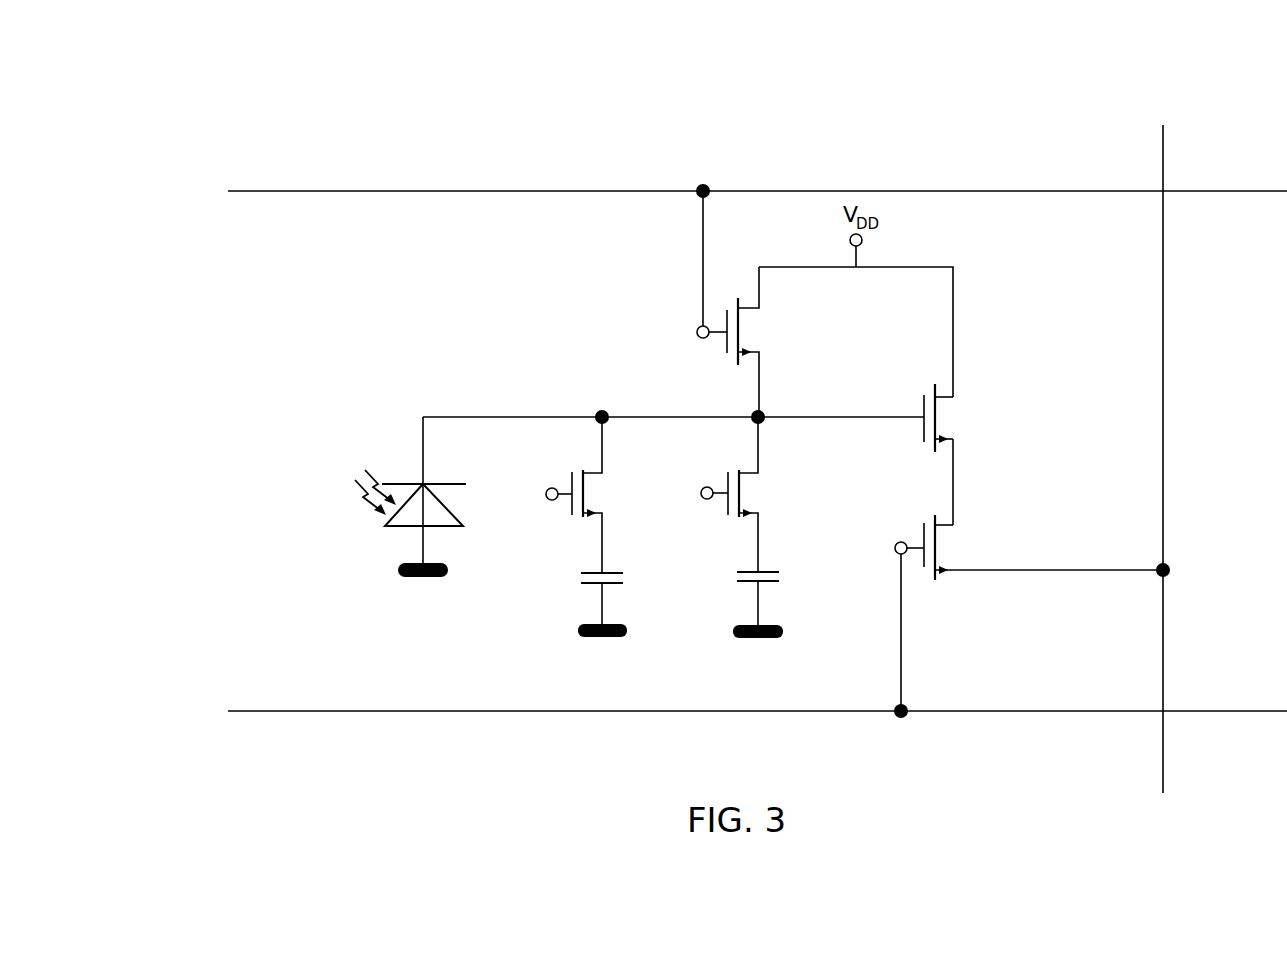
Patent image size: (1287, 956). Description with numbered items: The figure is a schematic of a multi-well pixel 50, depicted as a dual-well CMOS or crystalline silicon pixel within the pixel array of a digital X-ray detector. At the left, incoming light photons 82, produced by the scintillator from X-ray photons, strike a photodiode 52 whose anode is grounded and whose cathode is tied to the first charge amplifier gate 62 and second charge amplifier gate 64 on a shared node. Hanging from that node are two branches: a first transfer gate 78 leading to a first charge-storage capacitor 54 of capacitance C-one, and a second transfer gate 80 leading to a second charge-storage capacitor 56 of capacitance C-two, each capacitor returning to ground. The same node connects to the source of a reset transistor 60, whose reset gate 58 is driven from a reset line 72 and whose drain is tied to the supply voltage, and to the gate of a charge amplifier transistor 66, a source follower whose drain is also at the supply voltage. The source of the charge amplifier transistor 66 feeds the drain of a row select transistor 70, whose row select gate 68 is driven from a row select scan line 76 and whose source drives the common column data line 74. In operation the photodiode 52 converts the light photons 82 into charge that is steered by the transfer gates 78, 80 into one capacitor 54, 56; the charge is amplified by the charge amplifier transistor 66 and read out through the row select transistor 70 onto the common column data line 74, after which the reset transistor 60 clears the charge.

The multi-well pixel 50 is at (232, 106).
The photodiode 52 is at (448, 528).
The first charge-storage capacitor 54 is at (589, 586).
The second charge-storage capacitor 56 is at (740, 582).
The reset gate 58 is at (696, 332).
The reset transistor 60 is at (726, 345).
The first charge amplifier gate 62 is at (601, 409).
The second charge amplifier gate 64 is at (761, 412).
The charge amplifier transistor 66 is at (922, 430).
The row select gate 68 is at (894, 548).
The row select transistor 70 is at (922, 572).
The reset line 72 is at (701, 183).
The common column data line 74 is at (1171, 570).
The row select scan line 76 is at (902, 722).
The first transfer gate 78 is at (544, 493).
The second transfer gate 80 is at (701, 493).
The light photons 82 is at (359, 490).